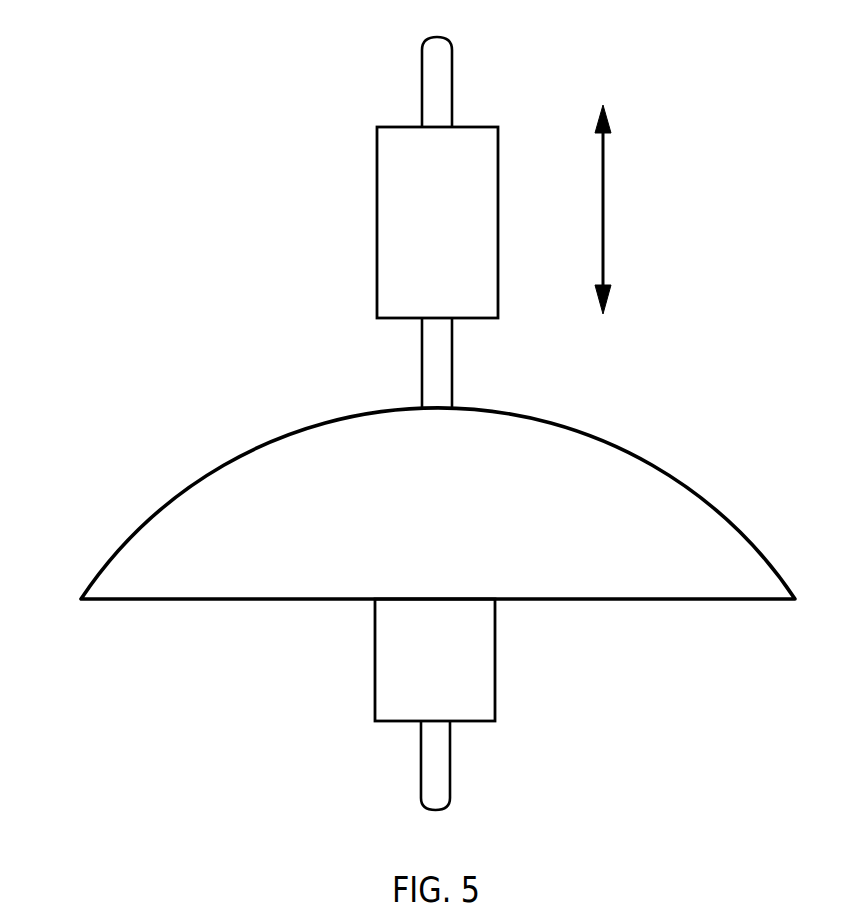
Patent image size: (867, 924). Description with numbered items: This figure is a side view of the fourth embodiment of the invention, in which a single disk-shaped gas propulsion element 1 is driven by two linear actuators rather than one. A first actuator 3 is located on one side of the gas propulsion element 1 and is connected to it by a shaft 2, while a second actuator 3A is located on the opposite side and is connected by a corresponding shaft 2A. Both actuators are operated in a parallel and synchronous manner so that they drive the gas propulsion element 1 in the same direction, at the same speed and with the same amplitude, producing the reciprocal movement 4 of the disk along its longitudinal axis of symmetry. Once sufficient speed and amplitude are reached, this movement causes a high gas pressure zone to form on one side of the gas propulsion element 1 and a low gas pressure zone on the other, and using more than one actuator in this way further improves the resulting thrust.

The gas propulsion element 1 is at (150, 562).
The shaft 2 is at (437, 378).
The first actuator 3 is at (402, 218).
The reciprocal movement 4 is at (603, 218).
The second actuator 3A is at (402, 693).
The shaft 2A is at (438, 781).